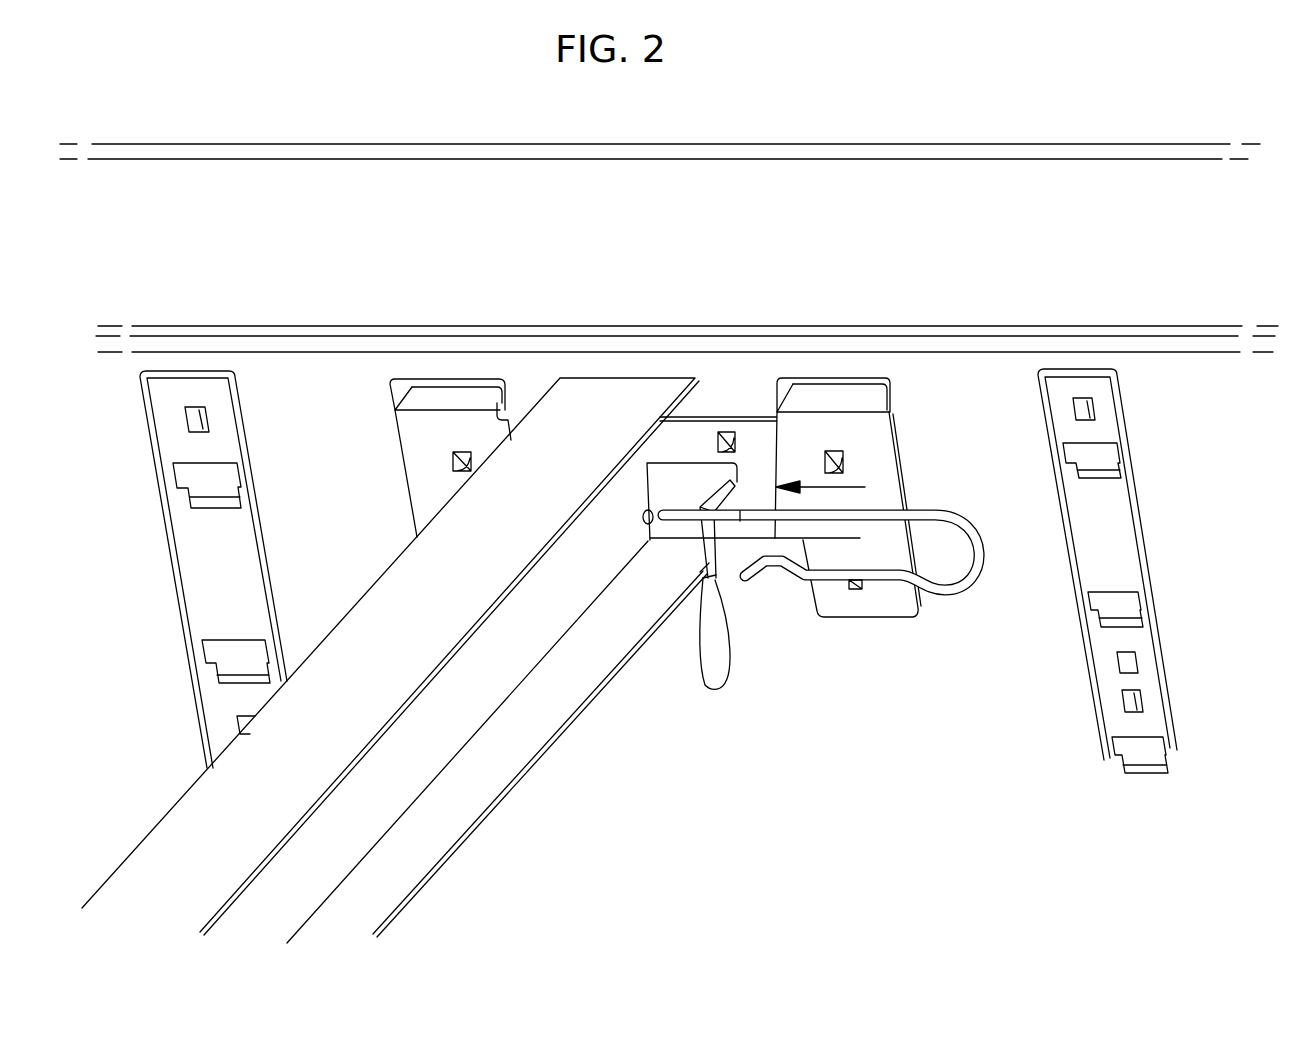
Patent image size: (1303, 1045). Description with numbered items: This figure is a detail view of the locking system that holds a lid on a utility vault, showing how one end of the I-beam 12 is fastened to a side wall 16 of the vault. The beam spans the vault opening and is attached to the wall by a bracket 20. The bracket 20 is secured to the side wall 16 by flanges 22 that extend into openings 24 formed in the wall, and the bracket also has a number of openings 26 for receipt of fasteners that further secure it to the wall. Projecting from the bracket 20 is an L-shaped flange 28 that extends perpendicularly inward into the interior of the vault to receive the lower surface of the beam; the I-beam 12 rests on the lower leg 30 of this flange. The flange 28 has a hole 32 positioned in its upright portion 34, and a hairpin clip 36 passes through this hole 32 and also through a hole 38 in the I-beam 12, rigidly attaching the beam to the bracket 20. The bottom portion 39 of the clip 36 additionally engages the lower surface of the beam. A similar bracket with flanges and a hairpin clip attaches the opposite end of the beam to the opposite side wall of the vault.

The I-beam 12 is at (541, 708).
The side wall 16 is at (970, 719).
The bracket 20 is at (870, 463).
The flanges 22 is at (478, 397).
The openings 24 is at (436, 384).
The openings 26 is at (452, 462).
The L-shaped flange 28 is at (717, 545).
The lower leg 30 is at (723, 684).
The hole 32 is at (748, 516).
The upright portion 34 is at (720, 553).
The hairpin clip 36 is at (960, 523).
The hole 38 is at (652, 535).
The bottom portion 39 is at (873, 576).